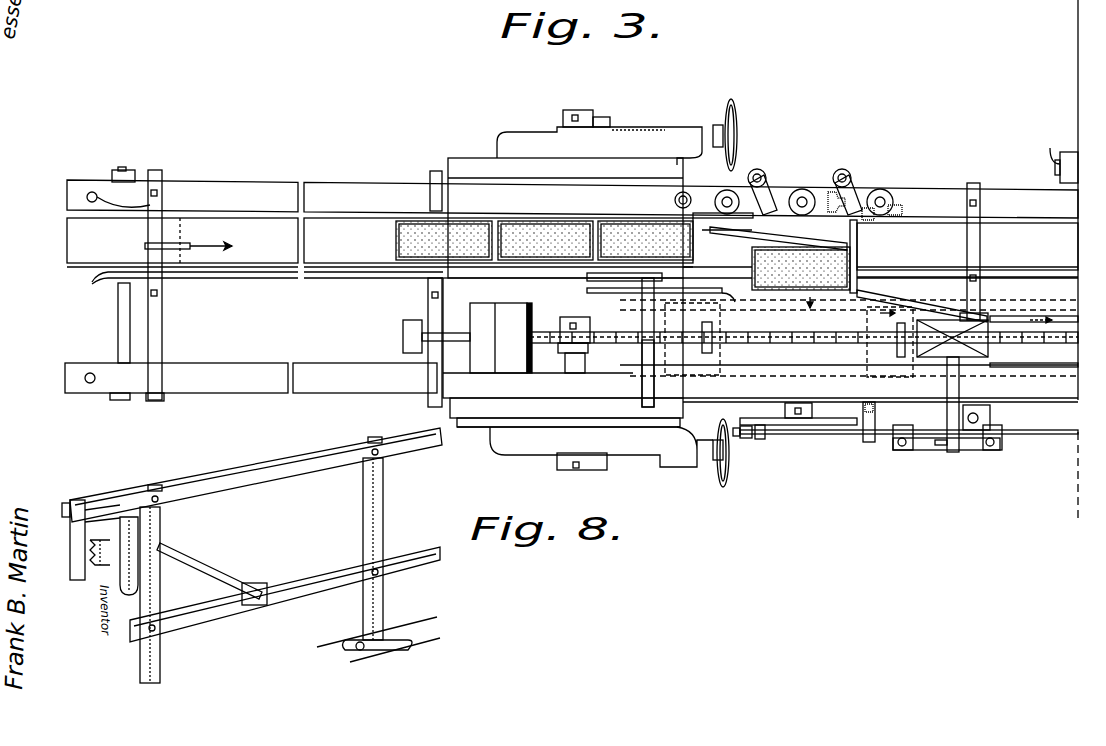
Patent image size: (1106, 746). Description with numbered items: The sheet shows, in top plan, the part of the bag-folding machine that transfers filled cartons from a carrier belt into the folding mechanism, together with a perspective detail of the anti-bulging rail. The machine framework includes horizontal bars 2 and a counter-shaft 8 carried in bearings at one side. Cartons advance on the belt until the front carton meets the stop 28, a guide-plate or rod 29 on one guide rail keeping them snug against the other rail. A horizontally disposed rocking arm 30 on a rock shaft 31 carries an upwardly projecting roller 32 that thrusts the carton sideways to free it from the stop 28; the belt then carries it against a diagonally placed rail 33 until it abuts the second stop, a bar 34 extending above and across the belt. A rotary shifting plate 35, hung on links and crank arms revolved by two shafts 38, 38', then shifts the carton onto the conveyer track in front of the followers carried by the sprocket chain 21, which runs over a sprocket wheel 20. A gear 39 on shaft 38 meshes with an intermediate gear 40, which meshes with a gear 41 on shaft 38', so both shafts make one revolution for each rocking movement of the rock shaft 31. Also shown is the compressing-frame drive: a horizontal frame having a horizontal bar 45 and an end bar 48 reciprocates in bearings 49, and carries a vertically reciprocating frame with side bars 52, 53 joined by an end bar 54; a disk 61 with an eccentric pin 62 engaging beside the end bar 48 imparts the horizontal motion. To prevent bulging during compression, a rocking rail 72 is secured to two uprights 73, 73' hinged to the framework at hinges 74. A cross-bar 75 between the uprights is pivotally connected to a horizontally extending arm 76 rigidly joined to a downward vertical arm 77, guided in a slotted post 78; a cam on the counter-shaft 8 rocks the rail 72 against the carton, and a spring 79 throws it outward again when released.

In FIG. 3, the horizontal bars 2 is at (1010, 198).
In FIG. 3, the counter-shaft 8 is at (1059, 158).
In FIG. 3, the sprocket wheel 20 is at (556, 341).
In FIG. 3, the sprocket chain 21 is at (796, 340).
In FIG. 3, the stop 28 is at (747, 253).
In FIG. 3, the guide-plate or rod 29 is at (612, 236).
In FIG. 3, the rocking arm 30 is at (703, 195).
In FIG. 3, the rock shaft 31 is at (757, 170).
In FIG. 3, the roller 32 is at (668, 198).
In FIG. 3, the diagonally placed rail 33 is at (775, 240).
In FIG. 3, the bar 34 is at (860, 252).
In FIG. 3, the shifting plate 35 is at (838, 170).
In FIG. 3, the shaft 38 is at (804, 179).
In FIG. 3, the shaft 38' is at (890, 179).
In FIG. 3, the gear 39 is at (818, 233).
In FIG. 3, the intermediate gear 40 is at (860, 208).
In FIG. 3, the gear 41 is at (898, 205).
In FIG. 3, the horizontal bar 45 is at (1038, 436).
In FIG. 3, the end bar 48 is at (745, 440).
In FIG. 3, the bearings 49 is at (870, 442).
In FIG. 3, the side bar 52 is at (993, 452).
In FIG. 3, the side bar 53 is at (900, 452).
In FIG. 3, the end bar 54 is at (974, 452).
In FIG. 3, the disk 61 is at (828, 428).
In FIG. 3, the pin 62 is at (760, 440).
In FIG. 3, the rocking rail 72 is at (1020, 320).
In FIG. 8, the rocking rail 72 is at (260, 465).
In FIG. 8, the upright 73 is at (356, 549).
In FIG. 8, the upright 73' is at (174, 595).
In FIG. 3, the hinges 74 is at (986, 310).
In FIG. 8, the hinges 74 is at (396, 634).
In FIG. 8, the cross-bar 75 is at (312, 578).
In FIG. 8, the horizontally extending arm 76 is at (222, 572).
In FIG. 3, the vertical arm 77 is at (1030, 376).
In FIG. 8, the vertical arm 77 is at (72, 500).
In FIG. 8, the post 78 is at (140, 570).
In FIG. 8, the spring 79 is at (98, 545).